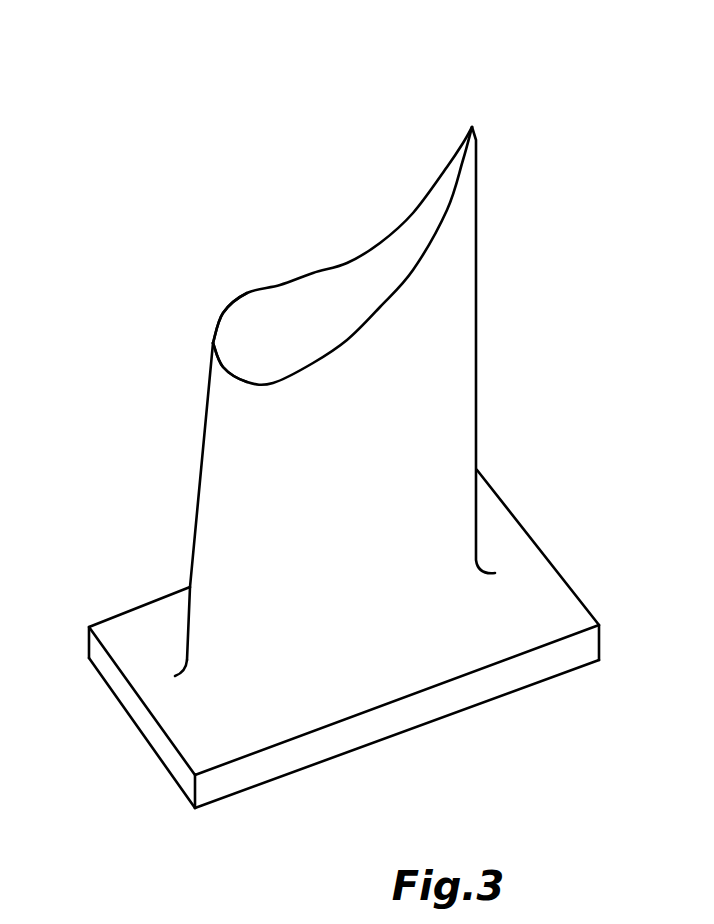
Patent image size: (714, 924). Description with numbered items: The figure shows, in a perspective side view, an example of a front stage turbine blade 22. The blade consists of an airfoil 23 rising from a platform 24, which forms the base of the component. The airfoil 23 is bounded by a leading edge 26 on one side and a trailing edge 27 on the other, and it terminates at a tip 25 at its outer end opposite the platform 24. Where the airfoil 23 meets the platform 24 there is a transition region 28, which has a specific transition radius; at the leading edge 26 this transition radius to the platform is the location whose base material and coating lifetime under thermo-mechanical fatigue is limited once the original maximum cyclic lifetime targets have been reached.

The turbine blade 22 is at (274, 162).
The airfoil 23 is at (316, 507).
The platform 24 is at (547, 665).
The tip 25 is at (254, 306).
The leading edge 26 is at (189, 466).
The trailing edge 27 is at (487, 342).
The transition region 28 is at (169, 652).